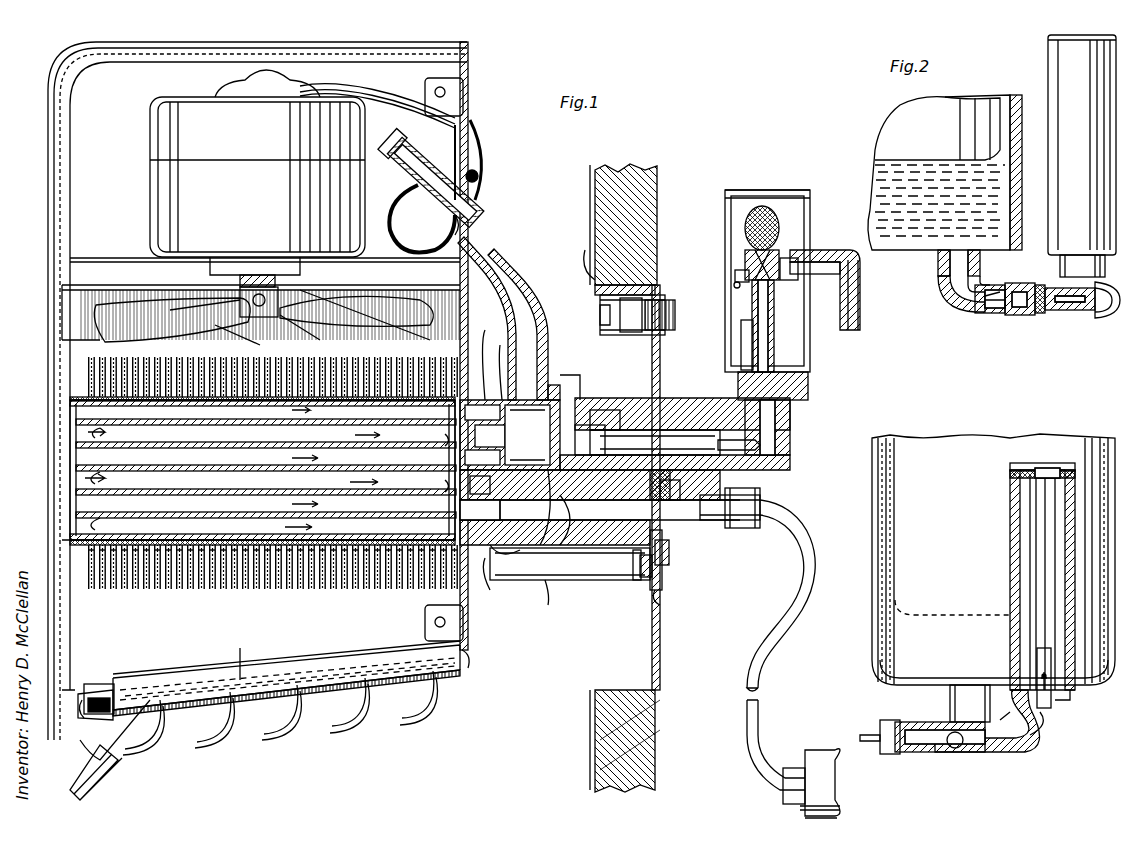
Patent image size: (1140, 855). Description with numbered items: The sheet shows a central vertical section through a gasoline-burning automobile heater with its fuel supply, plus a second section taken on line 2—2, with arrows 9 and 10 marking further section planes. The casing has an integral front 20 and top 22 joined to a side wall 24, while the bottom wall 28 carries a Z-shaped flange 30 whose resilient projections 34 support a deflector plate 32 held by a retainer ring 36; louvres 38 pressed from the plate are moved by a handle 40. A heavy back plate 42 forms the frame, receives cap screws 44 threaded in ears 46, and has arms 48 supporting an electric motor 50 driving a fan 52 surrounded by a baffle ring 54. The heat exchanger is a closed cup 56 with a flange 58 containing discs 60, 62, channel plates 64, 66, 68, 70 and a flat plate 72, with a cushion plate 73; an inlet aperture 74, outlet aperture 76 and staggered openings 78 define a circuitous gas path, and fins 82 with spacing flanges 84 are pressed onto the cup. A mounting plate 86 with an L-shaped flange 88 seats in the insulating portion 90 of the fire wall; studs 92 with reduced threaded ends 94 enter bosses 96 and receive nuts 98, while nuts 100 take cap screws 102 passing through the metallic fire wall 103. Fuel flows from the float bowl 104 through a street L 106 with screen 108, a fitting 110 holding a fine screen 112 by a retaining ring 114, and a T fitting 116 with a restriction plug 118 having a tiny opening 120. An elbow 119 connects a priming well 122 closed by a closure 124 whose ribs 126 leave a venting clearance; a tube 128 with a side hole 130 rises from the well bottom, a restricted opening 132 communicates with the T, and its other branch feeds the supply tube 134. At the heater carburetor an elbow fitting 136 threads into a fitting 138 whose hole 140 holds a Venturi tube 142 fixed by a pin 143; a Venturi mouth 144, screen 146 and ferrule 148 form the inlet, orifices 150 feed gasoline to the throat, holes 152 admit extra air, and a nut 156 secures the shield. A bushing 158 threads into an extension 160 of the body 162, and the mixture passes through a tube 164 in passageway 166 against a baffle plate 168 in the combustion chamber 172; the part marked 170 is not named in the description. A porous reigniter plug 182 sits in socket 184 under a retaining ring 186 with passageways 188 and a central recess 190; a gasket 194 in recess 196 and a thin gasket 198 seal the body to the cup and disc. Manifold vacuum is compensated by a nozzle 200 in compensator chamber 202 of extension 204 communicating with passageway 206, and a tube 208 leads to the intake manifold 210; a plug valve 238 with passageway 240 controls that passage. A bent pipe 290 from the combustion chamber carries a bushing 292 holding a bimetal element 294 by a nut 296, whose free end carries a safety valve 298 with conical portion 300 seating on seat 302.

In FIG. 2, the section line 2 is at (980, 402).
In FIG. 1, the section line 9 is at (500, 318).
In FIG. 1, the section line 10 is at (245, 347).
In FIG. 1, the front 20 is at (70, 450).
In FIG. 1, the top 22 is at (165, 52).
In FIG. 1, the side wall 24 is at (62, 538).
In FIG. 1, the bottom wall 28 is at (472, 660).
In FIG. 1, the Z-shaped flange 30 is at (90, 716).
In FIG. 1, the deflector plate 32 is at (125, 690).
In FIG. 1, the resilient projections 34 is at (92, 760).
In FIG. 1, the retainer ring 36 is at (92, 692).
In FIG. 1, the louvres 38 is at (275, 742).
In FIG. 1, the handle 40 is at (95, 782).
In FIG. 1, the back plate 42 is at (468, 285).
In FIG. 1, the cap screws 44 is at (435, 90).
In FIG. 1, the ears 46 is at (455, 82).
In FIG. 1, the arms 48 is at (380, 258).
In FIG. 1, the electric motor 50 is at (158, 207).
In FIG. 1, the fan 52 is at (130, 300).
In FIG. 1, the flanged baffle ring 54 is at (85, 285).
In FIG. 1, the closed end tube 56 is at (72, 410).
In FIG. 1, the flange 58 is at (465, 596).
In FIG. 1, the disc 60 is at (109, 501).
In FIG. 1, the disc 62 is at (452, 454).
In FIG. 1, the channel-shaped plate 64 is at (228, 424).
In FIG. 1, the channel-shaped plate 66 is at (238, 446).
In FIG. 1, the channel-shaped plate 68 is at (236, 492).
In FIG. 1, the channel-shaped plate 70 is at (240, 503).
In FIG. 1, the flat plate 72 is at (236, 456).
In FIG. 1, the cushion plate 73 is at (113, 433).
In FIG. 1, the inlet aperture 74 is at (452, 409).
In FIG. 1, the outlet aperture 76 is at (452, 525).
In FIG. 1, the openings 78 is at (72, 436).
In FIG. 1, the heat radiating fins 82 is at (110, 600).
In FIG. 1, the flanges 84 is at (185, 604).
In FIG. 1, the mounting plate 86 is at (660, 640).
In FIG. 1, the L-shaped flange 88 is at (598, 292).
In FIG. 1, the insulating portion 90 is at (595, 262).
In FIG. 1, the studs 92 is at (618, 590).
In FIG. 1, the threaded ends 94 is at (665, 598).
In FIG. 1, the bosses 96 is at (650, 580).
In FIG. 1, the nuts 98 is at (668, 570).
In FIG. 1, the nuts 100 is at (640, 305).
In FIG. 1, the cap screws 102 is at (650, 315).
In FIG. 1, the metallic fire wall 103 is at (680, 190).
In FIG. 2, the float bowl 104 is at (908, 250).
In FIG. 2, the street L 106 is at (948, 300).
In FIG. 2, the screen 108 is at (942, 290).
In FIG. 2, the fitting 110 is at (1000, 315).
In FIG. 2, the fine mesh screen 112 is at (990, 320).
In FIG. 2, the retaining ring 114 is at (1012, 315).
In FIG. 2, the T fitting 116 is at (1070, 312).
In FIG. 2, the flow restriction plug 118 is at (1043, 315).
In FIG. 2, the elbow 119 is at (1060, 266).
In FIG. 2, the small opening 120 is at (1070, 320).
In FIG. 2, the priming well 122 is at (1060, 200).
In FIG. 2, the closure 124 is at (1010, 465).
In FIG. 2, the ribs 126 is at (1020, 478).
In FIG. 2, the tube 128 is at (1037, 660).
In FIG. 2, the hole 130 is at (1040, 675).
In FIG. 2, the restricted opening 132 is at (1045, 745).
In FIG. 2, the tube 134 is at (925, 719).
In FIG. 1, the elbow fitting 136 is at (860, 310).
In FIG. 1, the fitting 138 is at (725, 255).
In FIG. 1, the diametral hole 140 is at (752, 300).
In FIG. 1, the Venturi tube 142 is at (752, 320).
In FIG. 1, the pin 143 is at (738, 275).
In FIG. 1, the Venturi mouth 144 is at (762, 205).
In FIG. 1, the fine mesh screen 146 is at (755, 205).
In FIG. 1, the flanged ferrule 148 is at (805, 250).
In FIG. 1, the orifices 150 is at (800, 262).
In FIG. 1, the holes 152 is at (740, 350).
In FIG. 1, the nut 156 is at (800, 262).
In FIG. 1, the bushing 158 is at (775, 395).
In FIG. 1, the extension 160 is at (790, 412).
In FIG. 1, the body 162 is at (590, 400).
In FIG. 1, the tube 164 is at (675, 430).
In FIG. 1, the passageway 166 is at (765, 450).
In FIG. 1, the baffle plate 168 is at (575, 418).
In FIG. 1, the housing 170 is at (600, 507).
In FIG. 1, the combustion chamber 172 is at (597, 400).
In FIG. 1, the reigniter plug 182 is at (548, 428).
In FIG. 1, the socket 184 is at (493, 483).
In FIG. 1, the retaining ring 186 is at (488, 503).
In FIG. 1, the passageways 188 is at (526, 438).
In FIG. 1, the recess 190 is at (504, 440).
In FIG. 1, the gasket 194 is at (482, 330).
In FIG. 1, the recess 196 is at (500, 360).
In FIG. 1, the thin gasket 198 is at (445, 500).
In FIG. 1, the restriction nozzle 200 is at (735, 530).
In FIG. 1, the compensator chamber 202 is at (745, 530).
In FIG. 1, the extension 204 is at (680, 492).
In FIG. 1, the passageway 206 is at (509, 543).
In FIG. 1, the tube 208 is at (788, 512).
In FIG. 1, the intake manifold 210 is at (826, 781).
In FIG. 1, the rotating plug valve 238 is at (560, 585).
In FIG. 1, the passageway 240 is at (585, 560).
In FIG. 1, the bent pipe 290 is at (520, 240).
In FIG. 1, the bushing 292 is at (492, 190).
In FIG. 1, the bimetal thermostatic element 294 is at (382, 226).
In FIG. 1, the nut 296 is at (480, 150).
In FIG. 1, the valve 298 is at (470, 148).
In FIG. 1, the conically shaped portion 300 is at (480, 172).
In FIG. 1, the seat 302 is at (445, 190).